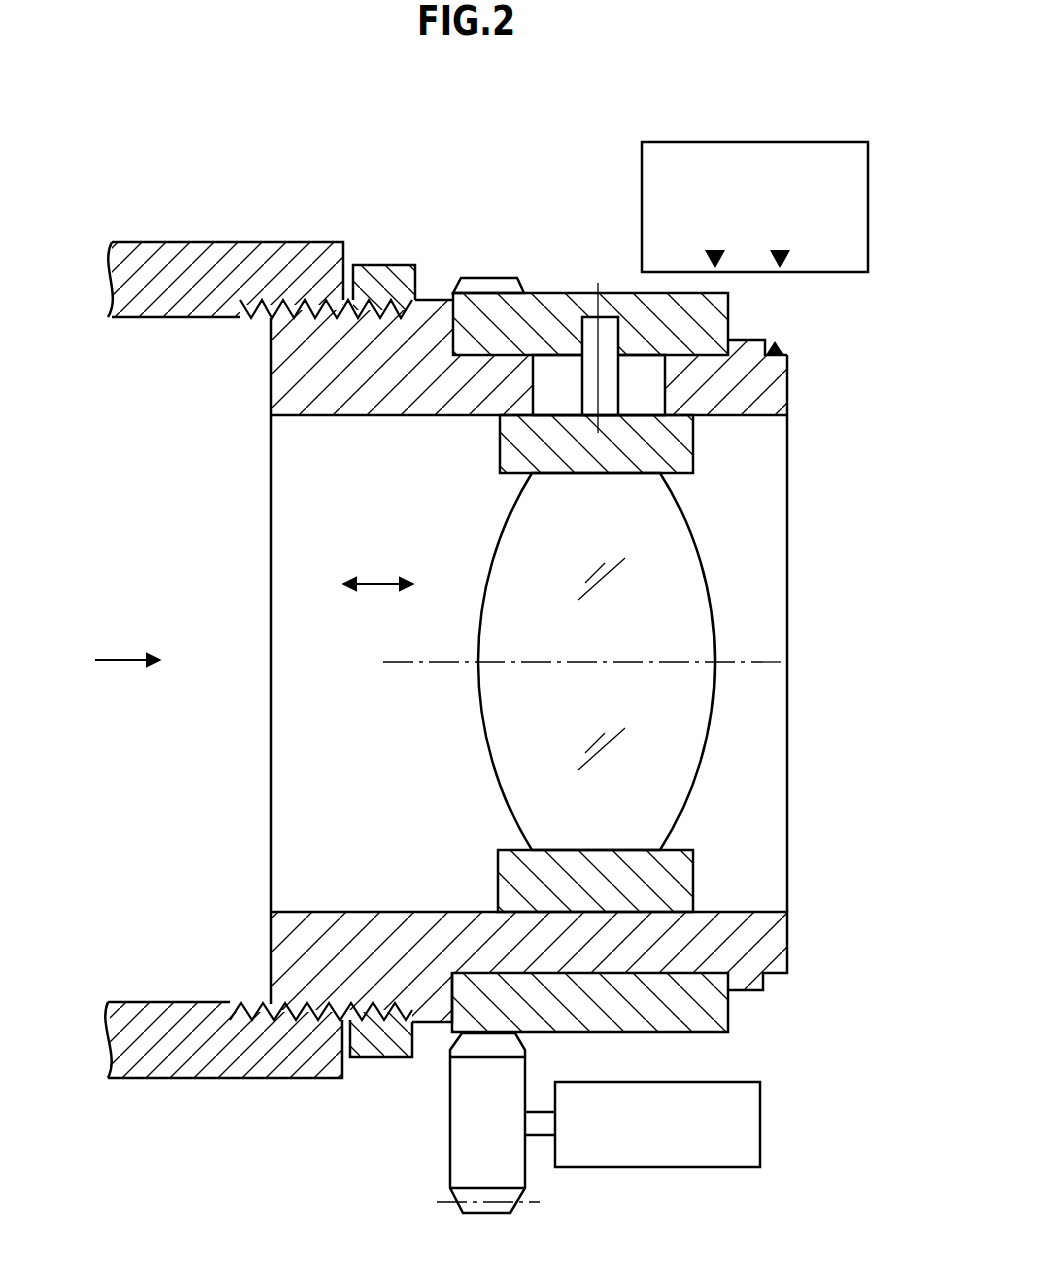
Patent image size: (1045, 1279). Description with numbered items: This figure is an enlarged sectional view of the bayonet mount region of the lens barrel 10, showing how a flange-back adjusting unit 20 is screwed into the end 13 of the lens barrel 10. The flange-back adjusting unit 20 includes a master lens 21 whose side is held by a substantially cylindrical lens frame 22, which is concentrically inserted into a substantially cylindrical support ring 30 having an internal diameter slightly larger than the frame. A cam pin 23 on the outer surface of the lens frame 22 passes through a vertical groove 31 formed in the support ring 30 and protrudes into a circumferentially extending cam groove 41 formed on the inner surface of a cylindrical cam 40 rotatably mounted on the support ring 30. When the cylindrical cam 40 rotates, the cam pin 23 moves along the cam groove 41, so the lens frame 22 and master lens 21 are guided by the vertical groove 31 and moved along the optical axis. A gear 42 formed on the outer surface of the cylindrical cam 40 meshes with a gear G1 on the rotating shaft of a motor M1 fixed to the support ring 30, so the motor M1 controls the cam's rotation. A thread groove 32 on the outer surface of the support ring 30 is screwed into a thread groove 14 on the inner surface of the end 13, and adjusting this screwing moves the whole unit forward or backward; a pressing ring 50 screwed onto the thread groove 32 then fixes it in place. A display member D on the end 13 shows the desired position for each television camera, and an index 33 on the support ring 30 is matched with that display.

The lens barrel 10 is at (86, 185).
The end of the lens barrel 13 is at (213, 258).
The thread groove 14 is at (249, 333).
The flange-back adjusting unit 20 is at (588, 188).
The master lens 21 is at (714, 583).
The lens frame 22 is at (697, 450).
The cam pin 23 is at (598, 350).
The support ring 30 is at (362, 395).
The vertical groove 31 is at (553, 370).
The thread groove 32 is at (318, 300).
The index 33 is at (784, 348).
The cylindrical cam 40 is at (722, 318).
The cam groove 41 is at (600, 342).
The gear 42 is at (472, 275).
The pressing ring 50 is at (383, 272).
The display member D is at (868, 225).
The gear G1 is at (450, 1160).
The motor M1 is at (760, 1128).